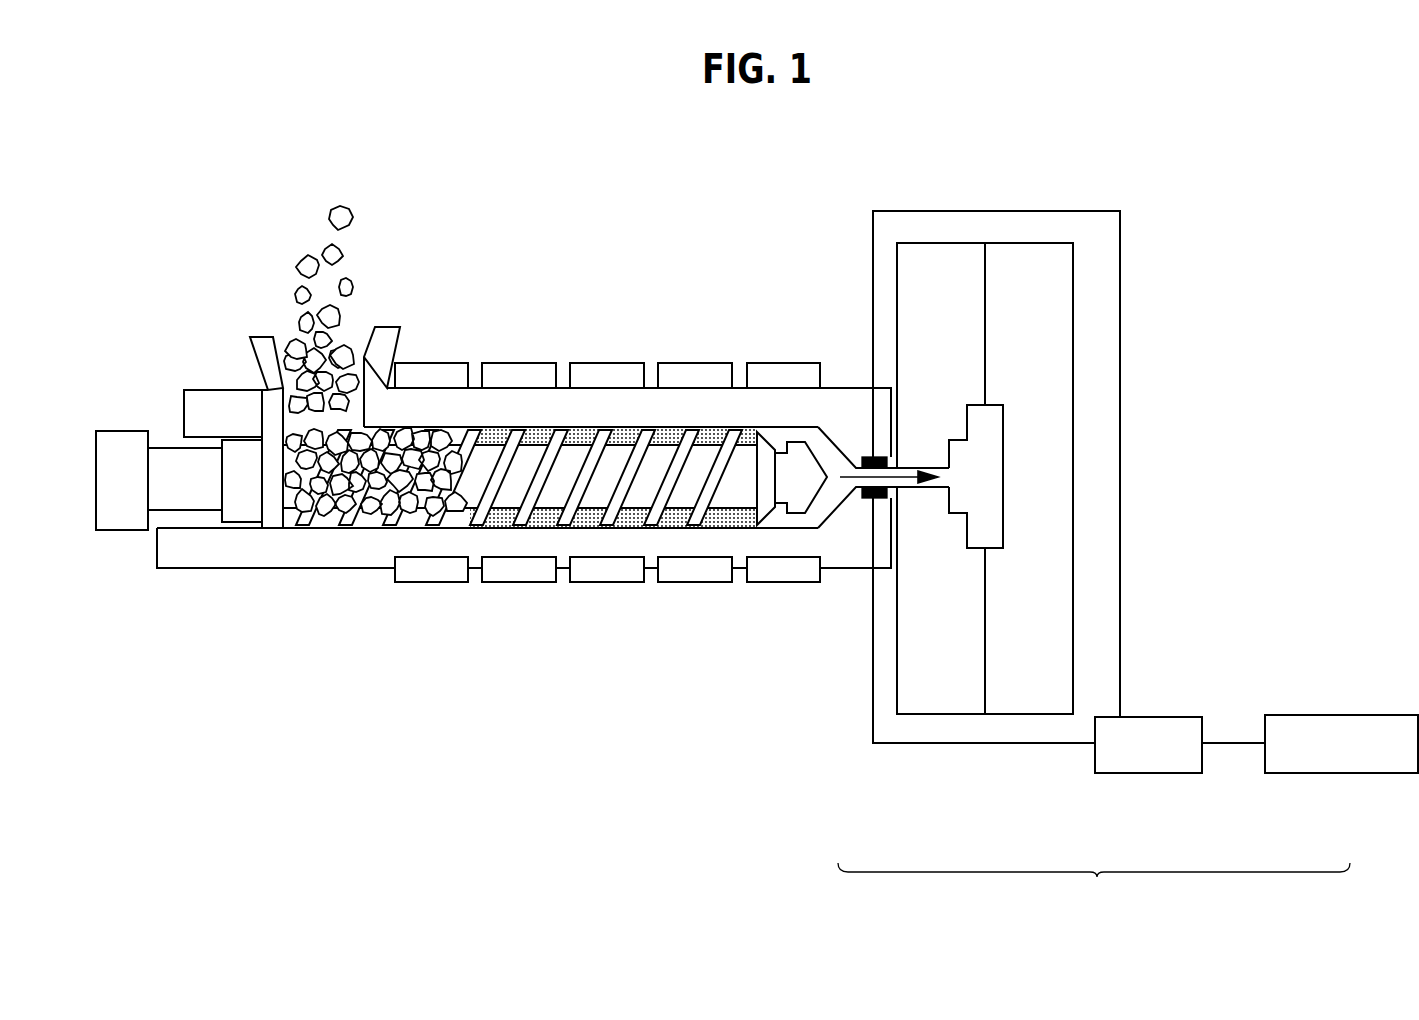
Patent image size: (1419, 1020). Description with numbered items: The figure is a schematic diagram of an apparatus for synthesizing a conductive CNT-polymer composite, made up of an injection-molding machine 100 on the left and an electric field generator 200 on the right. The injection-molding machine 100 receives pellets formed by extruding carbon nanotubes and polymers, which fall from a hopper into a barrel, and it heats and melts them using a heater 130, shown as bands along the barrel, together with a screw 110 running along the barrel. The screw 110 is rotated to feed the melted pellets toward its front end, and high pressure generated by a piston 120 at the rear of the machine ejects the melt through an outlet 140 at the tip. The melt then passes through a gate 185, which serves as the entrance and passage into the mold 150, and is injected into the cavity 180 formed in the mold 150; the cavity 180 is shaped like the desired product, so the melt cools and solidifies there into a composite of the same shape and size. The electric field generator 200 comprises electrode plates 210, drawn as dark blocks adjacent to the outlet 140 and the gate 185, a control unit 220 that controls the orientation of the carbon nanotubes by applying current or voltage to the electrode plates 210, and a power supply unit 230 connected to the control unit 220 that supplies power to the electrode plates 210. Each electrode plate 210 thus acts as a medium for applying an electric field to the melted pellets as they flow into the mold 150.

The injection-molding machine 100 is at (571, 315).
The screw 110 is at (657, 530).
The piston 120 is at (190, 495).
The heater 130 is at (440, 375).
The outlet 140 is at (870, 477).
The mold 150 is at (1032, 243).
The cavity 180 is at (987, 438).
The gate 185 is at (943, 477).
The electric field generator 200 is at (1094, 888).
The electrode plates 210 is at (868, 498).
The control unit 220 is at (1173, 773).
The power supply unit 230 is at (1345, 773).